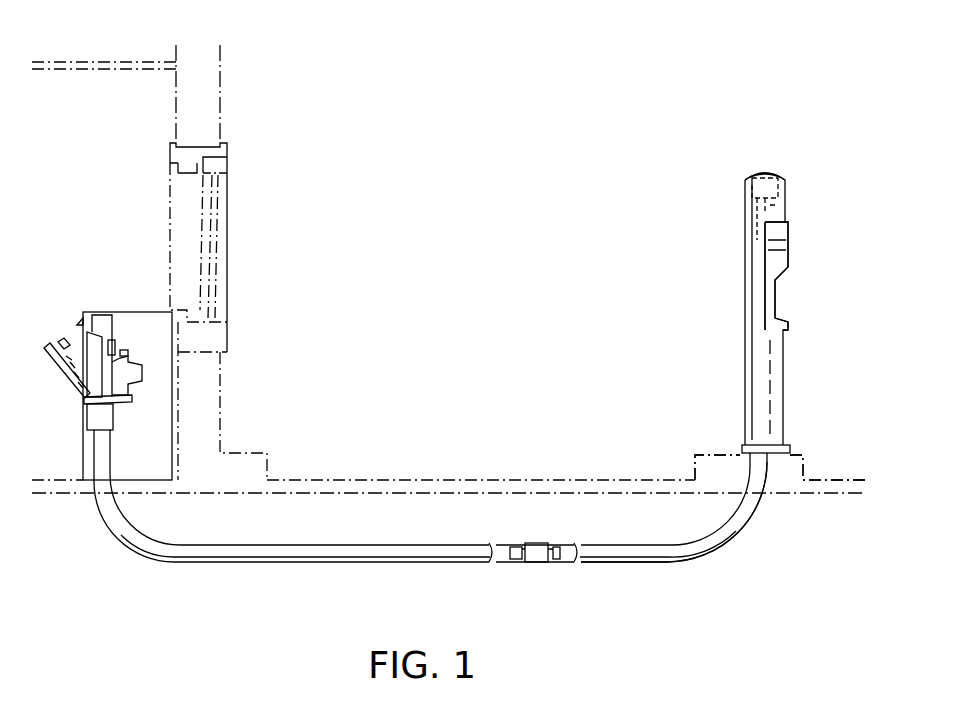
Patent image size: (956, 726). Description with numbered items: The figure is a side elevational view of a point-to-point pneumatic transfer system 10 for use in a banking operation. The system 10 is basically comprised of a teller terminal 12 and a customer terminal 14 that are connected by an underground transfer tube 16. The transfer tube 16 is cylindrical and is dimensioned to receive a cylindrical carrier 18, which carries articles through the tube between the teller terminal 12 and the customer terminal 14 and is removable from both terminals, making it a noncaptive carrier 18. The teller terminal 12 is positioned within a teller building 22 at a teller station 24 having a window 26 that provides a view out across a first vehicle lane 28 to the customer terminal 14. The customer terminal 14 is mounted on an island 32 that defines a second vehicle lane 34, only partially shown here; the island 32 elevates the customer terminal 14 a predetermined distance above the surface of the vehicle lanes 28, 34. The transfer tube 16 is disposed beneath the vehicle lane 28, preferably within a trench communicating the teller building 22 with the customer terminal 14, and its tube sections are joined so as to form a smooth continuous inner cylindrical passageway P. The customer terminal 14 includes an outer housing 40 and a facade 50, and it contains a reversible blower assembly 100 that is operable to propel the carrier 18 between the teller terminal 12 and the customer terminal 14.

The point-to-point pneumatic transfer system 10 is at (510, 135).
The teller terminal 12 is at (62, 322).
The customer terminal 14 is at (735, 292).
The underground transfer tube 16 is at (355, 553).
The cylindrical carrier 18 is at (536, 553).
The teller building 22 is at (230, 105).
The teller station 24 is at (90, 285).
The window 26 is at (215, 232).
The first vehicle lane 28 is at (474, 480).
The island 32 is at (718, 455).
The second vehicle lane 34 is at (840, 478).
The outer housing 40 is at (745, 208).
The facade 50 is at (790, 258).
The reversible blower assembly 100 is at (793, 178).
The inner cylindrical passageway P is at (666, 565).